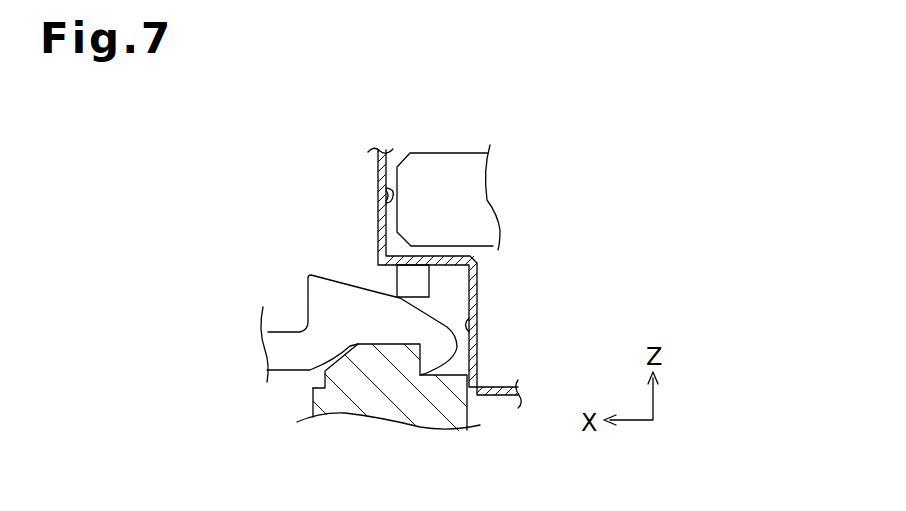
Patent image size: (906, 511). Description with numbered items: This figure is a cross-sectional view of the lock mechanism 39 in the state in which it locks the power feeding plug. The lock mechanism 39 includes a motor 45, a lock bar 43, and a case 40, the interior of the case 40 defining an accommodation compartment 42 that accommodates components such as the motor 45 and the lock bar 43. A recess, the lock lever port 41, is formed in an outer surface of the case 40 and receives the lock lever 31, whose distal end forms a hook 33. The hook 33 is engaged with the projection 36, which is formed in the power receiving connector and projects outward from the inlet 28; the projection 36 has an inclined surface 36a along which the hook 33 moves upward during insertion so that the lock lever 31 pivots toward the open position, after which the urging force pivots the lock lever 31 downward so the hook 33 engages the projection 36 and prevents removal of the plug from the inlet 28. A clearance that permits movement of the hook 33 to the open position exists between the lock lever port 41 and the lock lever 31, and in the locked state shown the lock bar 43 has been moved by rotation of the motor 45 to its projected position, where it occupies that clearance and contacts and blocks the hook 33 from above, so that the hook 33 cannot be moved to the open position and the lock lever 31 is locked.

The inlet 28 is at (433, 428).
The lock lever 31 is at (285, 331).
The hook 33 is at (318, 287).
The projection 36 is at (368, 352).
The inclined surface 36a is at (322, 372).
The lock mechanism 39 is at (319, 112).
The case 40 is at (377, 168).
The lock lever port 41 is at (470, 331).
The accommodation compartment 42 is at (383, 190).
The lock bar 43 is at (430, 290).
The motor 45 is at (445, 162).